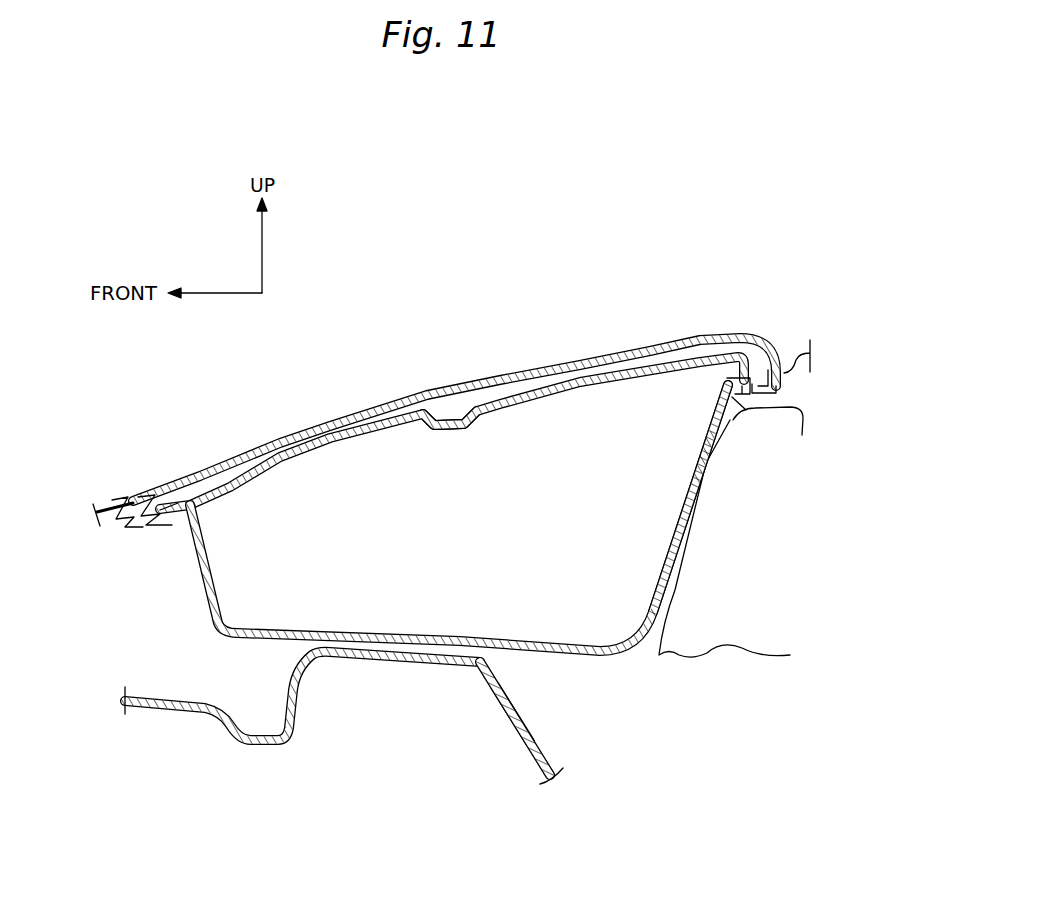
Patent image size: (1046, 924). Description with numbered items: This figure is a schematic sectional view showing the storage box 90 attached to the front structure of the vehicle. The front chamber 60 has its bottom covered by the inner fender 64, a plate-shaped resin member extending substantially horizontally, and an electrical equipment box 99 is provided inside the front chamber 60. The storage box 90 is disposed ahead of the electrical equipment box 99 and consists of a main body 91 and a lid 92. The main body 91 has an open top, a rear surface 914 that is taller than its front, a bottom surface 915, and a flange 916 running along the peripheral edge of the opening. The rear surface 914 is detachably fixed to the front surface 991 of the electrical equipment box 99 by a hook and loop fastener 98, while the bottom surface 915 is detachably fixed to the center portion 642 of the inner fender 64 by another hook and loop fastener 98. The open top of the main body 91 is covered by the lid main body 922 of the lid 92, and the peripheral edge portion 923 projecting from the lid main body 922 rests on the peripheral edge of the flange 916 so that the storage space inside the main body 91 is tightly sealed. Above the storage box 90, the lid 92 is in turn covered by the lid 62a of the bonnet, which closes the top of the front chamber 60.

The front chamber 60 is at (740, 333).
The lid 62a is at (450, 392).
The inner fender 64 is at (613, 723).
The center portion 642 is at (530, 730).
The storage box 90 is at (473, 406).
The main body 91 is at (459, 443).
The rear surface 914 is at (690, 483).
The bottom surface 915 is at (593, 657).
The flange 916 is at (178, 498).
The lid 92 is at (392, 420).
The lid main body 922 is at (452, 381).
The peripheral edge portion 923 is at (141, 497).
The hook and loop fastener 98 is at (683, 497).
The electrical equipment box 99 is at (795, 350).
The front surface 991 is at (700, 450).